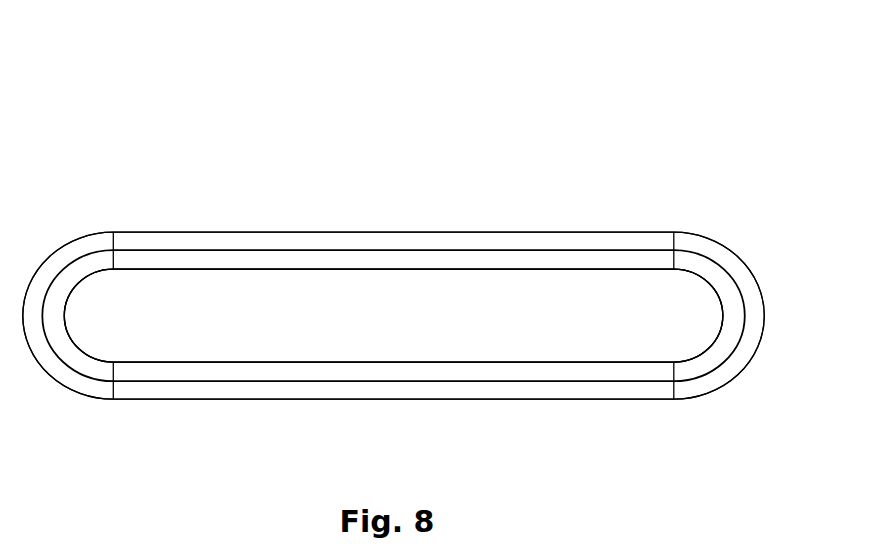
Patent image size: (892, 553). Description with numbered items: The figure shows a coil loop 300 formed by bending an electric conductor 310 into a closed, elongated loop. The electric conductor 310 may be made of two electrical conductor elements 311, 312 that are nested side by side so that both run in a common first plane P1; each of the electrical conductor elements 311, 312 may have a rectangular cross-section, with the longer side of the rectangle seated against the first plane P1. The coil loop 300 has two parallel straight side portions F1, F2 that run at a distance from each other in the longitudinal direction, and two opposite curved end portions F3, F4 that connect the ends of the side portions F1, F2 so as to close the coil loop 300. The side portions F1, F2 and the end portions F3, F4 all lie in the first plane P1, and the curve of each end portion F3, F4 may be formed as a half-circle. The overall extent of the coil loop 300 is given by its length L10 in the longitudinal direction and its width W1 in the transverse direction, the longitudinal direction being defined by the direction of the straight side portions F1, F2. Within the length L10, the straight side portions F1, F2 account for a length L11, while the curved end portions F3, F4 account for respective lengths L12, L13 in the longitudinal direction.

The coil loop 300 is at (281, 203).
The electric conductor 310 is at (466, 262).
The electrical conductor element 311 is at (573, 232).
The electrical conductor element 312 is at (571, 272).
The straight side portion F1 is at (395, 230).
The straight side portion F2 is at (400, 403).
The curved end portion F3 is at (737, 256).
The curved end portion F4 is at (45, 257).
The first plane P1 is at (406, 328).
The width W1 is at (792, 232).
The length L10 is at (24, 58).
The length L11 is at (125, 119).
The length L12 is at (673, 137).
The length L13 is at (24, 137).